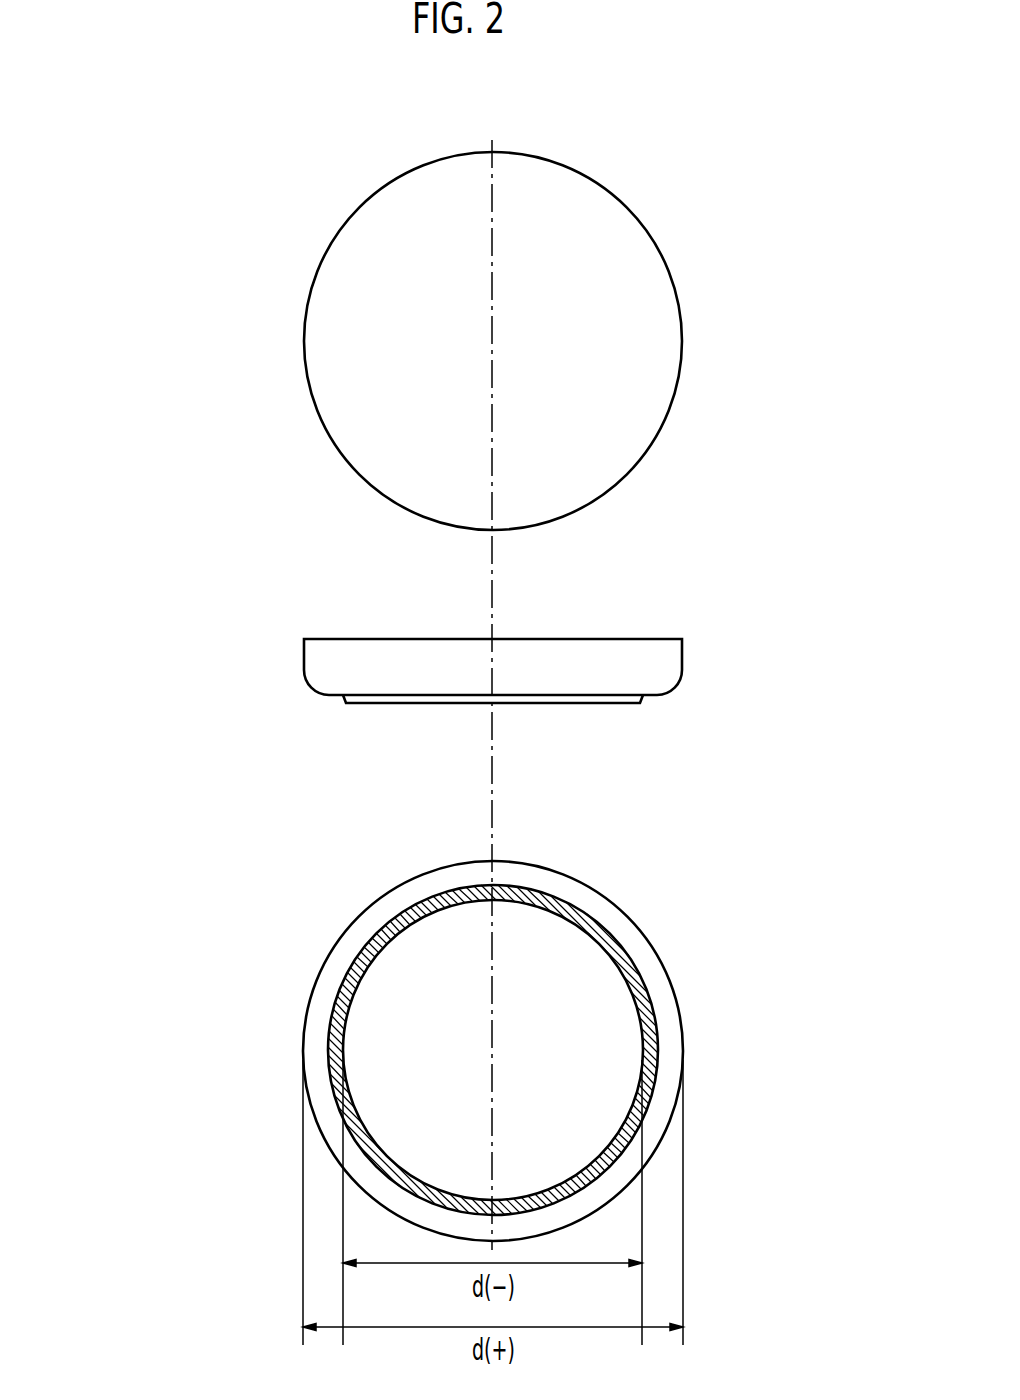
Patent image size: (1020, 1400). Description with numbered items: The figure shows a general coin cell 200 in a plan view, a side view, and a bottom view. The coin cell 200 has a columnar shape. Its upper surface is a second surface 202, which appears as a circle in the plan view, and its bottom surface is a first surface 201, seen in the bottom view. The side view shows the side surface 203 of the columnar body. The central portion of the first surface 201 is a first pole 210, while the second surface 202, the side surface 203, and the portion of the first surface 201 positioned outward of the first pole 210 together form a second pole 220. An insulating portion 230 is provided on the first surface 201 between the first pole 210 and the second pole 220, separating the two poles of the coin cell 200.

The coin cell 200 is at (138, 168).
The first surface 201 is at (665, 1053).
The second surface 202 is at (640, 313).
The side surface 203 is at (663, 665).
The first pole 210 is at (590, 703).
The second pole 220 is at (348, 639).
The insulating portion 230 is at (343, 982).